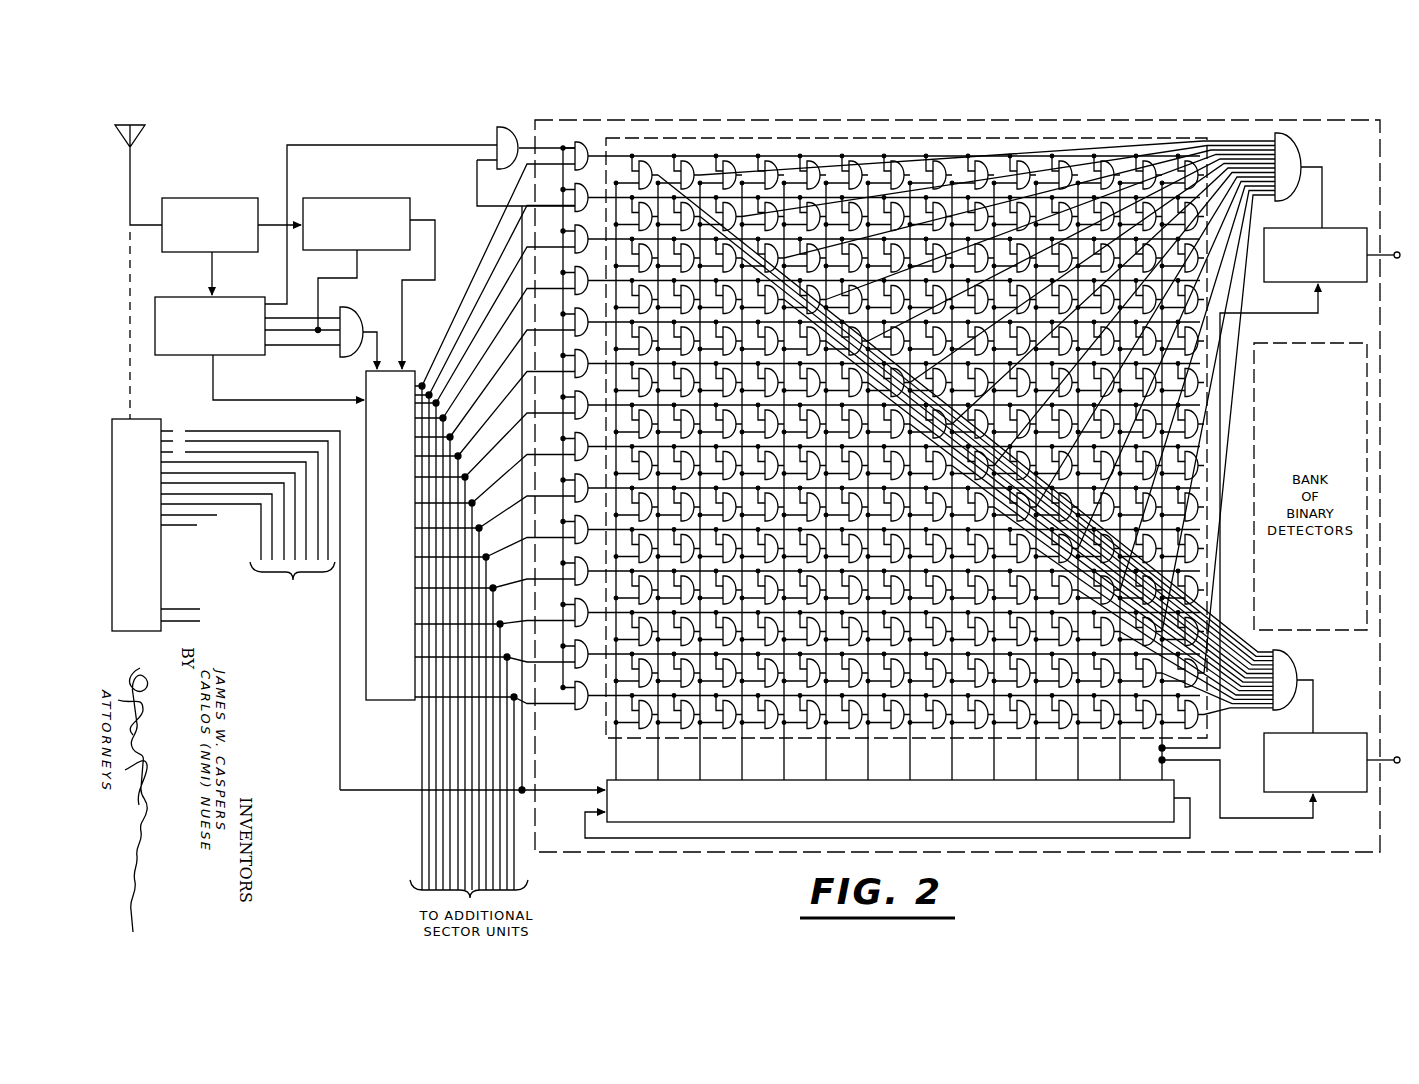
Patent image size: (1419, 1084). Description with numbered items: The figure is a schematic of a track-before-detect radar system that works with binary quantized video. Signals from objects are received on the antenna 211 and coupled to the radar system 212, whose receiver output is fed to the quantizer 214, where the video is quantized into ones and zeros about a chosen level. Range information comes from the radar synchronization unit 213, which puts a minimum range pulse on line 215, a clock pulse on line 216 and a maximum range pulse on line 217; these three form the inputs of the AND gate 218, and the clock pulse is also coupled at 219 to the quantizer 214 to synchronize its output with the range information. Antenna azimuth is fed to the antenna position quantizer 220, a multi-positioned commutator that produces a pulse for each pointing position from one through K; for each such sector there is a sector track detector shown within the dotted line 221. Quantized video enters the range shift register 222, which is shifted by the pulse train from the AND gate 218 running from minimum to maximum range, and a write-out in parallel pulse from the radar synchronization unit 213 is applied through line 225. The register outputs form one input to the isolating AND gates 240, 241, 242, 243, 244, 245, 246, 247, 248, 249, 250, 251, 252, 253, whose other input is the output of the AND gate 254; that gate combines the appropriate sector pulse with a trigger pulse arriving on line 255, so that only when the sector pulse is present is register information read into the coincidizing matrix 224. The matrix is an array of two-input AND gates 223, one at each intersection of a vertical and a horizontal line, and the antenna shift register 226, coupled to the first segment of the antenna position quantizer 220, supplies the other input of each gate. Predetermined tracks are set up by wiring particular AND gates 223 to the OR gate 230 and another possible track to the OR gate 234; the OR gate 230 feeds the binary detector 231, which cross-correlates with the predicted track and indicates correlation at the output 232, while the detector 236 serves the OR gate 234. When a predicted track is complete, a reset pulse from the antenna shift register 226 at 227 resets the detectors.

The antenna 211 is at (141, 131).
The radar system 212 is at (236, 196).
The radar synchronization unit 213 is at (259, 295).
The quantizer 214 is at (370, 202).
The line 215 is at (327, 315).
The line 216 is at (330, 345).
The line 217 is at (304, 346).
The AND gate 218 is at (358, 312).
The clock coupling 219 is at (361, 258).
The antenna position quantizer 220 is at (178, 408).
The sector track detector 221 is at (644, 115).
The range shift register 222 is at (372, 703).
The AND gates 223 is at (683, 153).
The coincidizing matrix 224 is at (771, 137).
The line 225 is at (212, 398).
The antenna shift register 226 is at (608, 778).
The reset pulse output 227 is at (1221, 745).
The OR gate 230 is at (1302, 150).
The binary detector 231 is at (1336, 228).
The output 232 is at (1388, 264).
The OR gate 234 is at (1295, 672).
The detector 236 is at (1324, 734).
The AND gate 240 is at (603, 151).
The AND gate 241 is at (605, 192).
The AND gate 242 is at (605, 234).
The AND gate 243 is at (605, 276).
The AND gate 244 is at (605, 317).
The AND gate 245 is at (605, 358).
The AND gate 246 is at (605, 400).
The AND gate 247 is at (605, 442).
The AND gate 248 is at (605, 483).
The AND gate 249 is at (605, 524).
The AND gate 250 is at (605, 566).
The AND gate 251 is at (605, 608).
The AND gate 252 is at (605, 649).
The AND gate 253 is at (578, 703).
The AND gate 254 is at (508, 126).
The line 255 is at (434, 141).